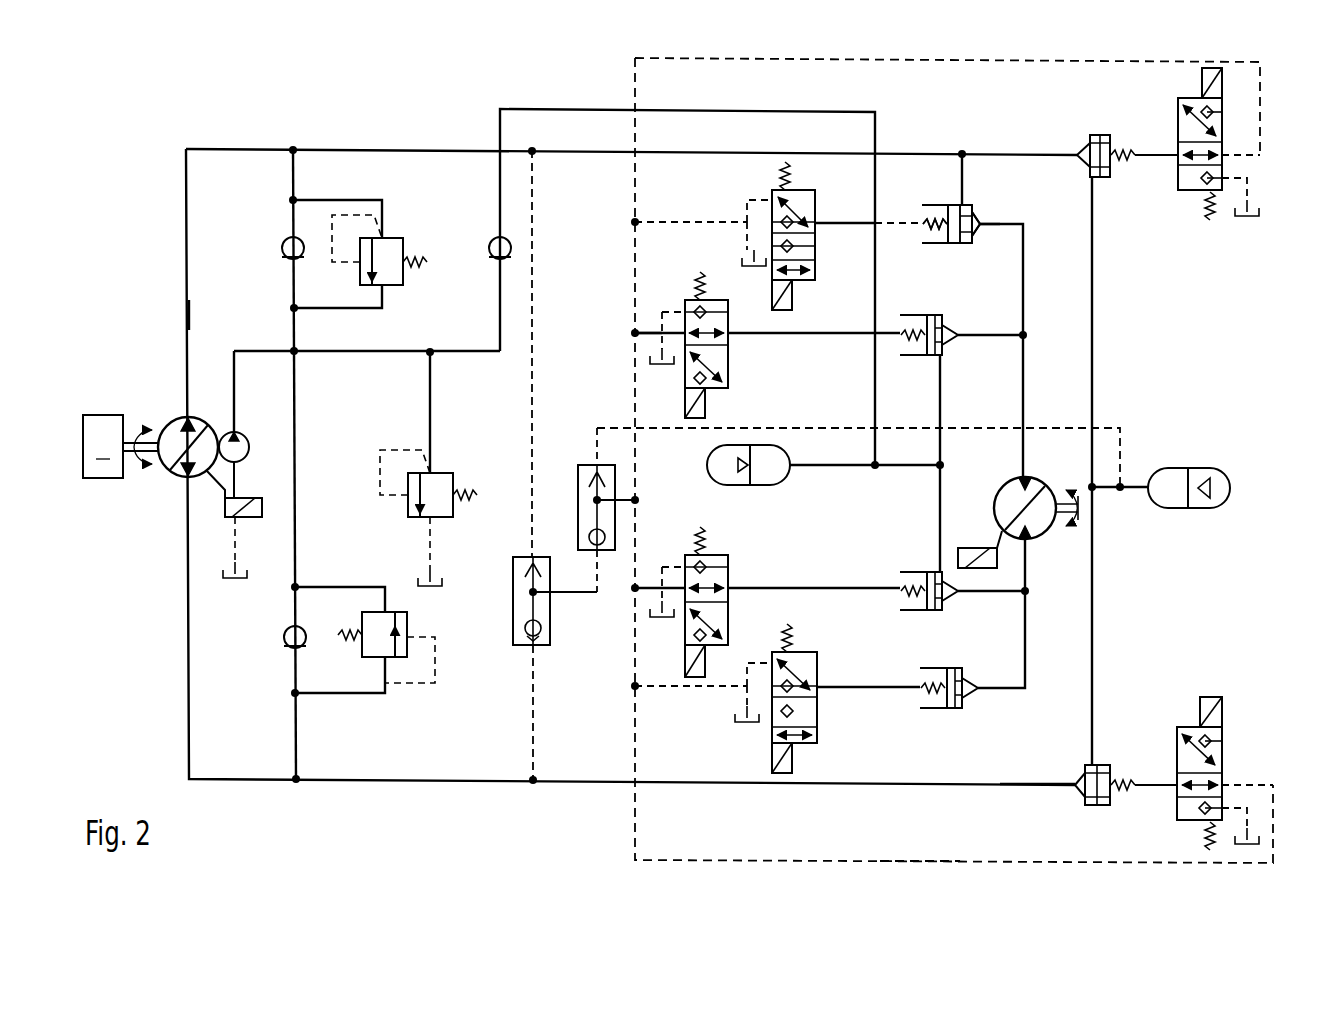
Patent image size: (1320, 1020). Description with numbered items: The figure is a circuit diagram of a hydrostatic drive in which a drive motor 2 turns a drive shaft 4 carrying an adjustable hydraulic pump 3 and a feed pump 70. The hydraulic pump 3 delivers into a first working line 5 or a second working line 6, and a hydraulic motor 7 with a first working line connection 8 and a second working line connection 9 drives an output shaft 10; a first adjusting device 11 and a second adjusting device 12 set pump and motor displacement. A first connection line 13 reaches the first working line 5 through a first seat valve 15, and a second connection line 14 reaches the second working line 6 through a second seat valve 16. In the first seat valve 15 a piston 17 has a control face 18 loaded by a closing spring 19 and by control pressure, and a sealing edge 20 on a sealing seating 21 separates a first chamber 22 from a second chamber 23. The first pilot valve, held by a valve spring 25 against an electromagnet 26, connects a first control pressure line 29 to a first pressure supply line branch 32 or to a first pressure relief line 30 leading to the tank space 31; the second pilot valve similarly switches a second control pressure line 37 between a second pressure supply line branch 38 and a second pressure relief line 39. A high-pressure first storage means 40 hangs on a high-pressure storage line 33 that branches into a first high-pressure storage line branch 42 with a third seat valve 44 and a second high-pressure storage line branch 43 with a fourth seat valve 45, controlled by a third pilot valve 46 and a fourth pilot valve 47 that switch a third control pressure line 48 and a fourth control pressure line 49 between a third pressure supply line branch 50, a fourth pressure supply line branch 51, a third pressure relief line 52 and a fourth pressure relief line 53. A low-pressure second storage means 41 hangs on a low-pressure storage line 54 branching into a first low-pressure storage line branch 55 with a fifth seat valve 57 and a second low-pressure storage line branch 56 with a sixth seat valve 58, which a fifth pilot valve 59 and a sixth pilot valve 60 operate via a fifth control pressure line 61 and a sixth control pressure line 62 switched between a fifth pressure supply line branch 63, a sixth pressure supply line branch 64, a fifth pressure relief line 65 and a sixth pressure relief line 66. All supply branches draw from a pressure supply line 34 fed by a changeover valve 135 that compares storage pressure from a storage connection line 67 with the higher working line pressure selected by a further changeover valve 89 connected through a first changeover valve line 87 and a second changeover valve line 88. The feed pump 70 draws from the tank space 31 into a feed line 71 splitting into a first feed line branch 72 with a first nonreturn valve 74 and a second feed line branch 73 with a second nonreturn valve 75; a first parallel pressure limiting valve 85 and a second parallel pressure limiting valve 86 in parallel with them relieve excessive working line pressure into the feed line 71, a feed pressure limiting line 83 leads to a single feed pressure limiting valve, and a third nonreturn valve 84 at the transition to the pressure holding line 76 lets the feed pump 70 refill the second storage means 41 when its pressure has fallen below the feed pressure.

The drive motor 2 is at (120, 446).
The hydraulic pump 3 is at (203, 425).
The drive shaft 4 is at (147, 428).
The first working line 5 is at (228, 149).
The second working line 6 is at (236, 779).
The hydraulic motor 7 is at (1005, 500).
The first working line connection 8 is at (1020, 482).
The second working line connection 9 is at (1036, 540).
The output shaft 10 is at (1076, 498).
The first adjusting device 11 is at (253, 520).
The second adjusting device 12 is at (966, 546).
The first connection line 13 is at (1025, 278).
The second connection line 14 is at (1027, 645).
The first seat valve 15 is at (918, 186).
The second seat valve 16 is at (920, 720).
The piston 17 is at (965, 216).
The control face 18 is at (940, 206).
The closing spring 19 is at (935, 246).
The sealing edge 20 is at (976, 241).
The sealing seating 21 is at (979, 224).
The first chamber 22 is at (956, 212).
The second chamber 23 is at (987, 227).
The valve spring 25 is at (800, 173).
The electromagnet 26 is at (794, 300).
The first control pressure line 29 is at (861, 232).
The first pressure relief line 30 is at (745, 203).
The tank space 31 is at (232, 580).
The first pressure supply line branch 32 is at (661, 220).
The high-pressure storage line 33 is at (1137, 490).
The pressure supply line 34 is at (637, 455).
The second control pressure line 37 is at (836, 690).
The second pressure supply line branch 38 is at (672, 690).
The second pressure relief line 39 is at (744, 698).
The first storage means 40 is at (1172, 468).
The second storage means 41 is at (763, 487).
The first high-pressure storage line branch 42 is at (1060, 152).
The second high-pressure storage line branch 43 is at (1094, 681).
The third seat valve 44 is at (1122, 125).
The fourth seat valve 45 is at (1068, 805).
The third pilot valve 46 is at (1238, 117).
The fourth pilot valve 47 is at (1160, 809).
The third control pressure line 48 is at (1160, 160).
The fourth control pressure line 49 is at (1160, 782).
The third pressure supply line branch 50 is at (969, 62).
The fourth pressure supply line branch 51 is at (925, 858).
The third pressure relief line 52 is at (1252, 193).
The fourth pressure relief line 53 is at (1262, 806).
The low-pressure storage line 54 is at (831, 468).
The first low-pressure storage line branch 55 is at (982, 340).
The second low-pressure storage line branch 56 is at (936, 498).
The fifth seat valve 57 is at (900, 363).
The sixth seat valve 58 is at (904, 616).
The fifth pilot valve 59 is at (660, 397).
The sixth pilot valve 60 is at (660, 651).
The fifth control pressure line 61 is at (782, 336).
The sixth control pressure line 62 is at (791, 586).
The fifth pressure supply line branch 63 is at (638, 330).
The sixth pressure supply line branch 64 is at (639, 585).
The fifth pressure relief line 65 is at (663, 305).
The sixth pressure relief line 66 is at (663, 560).
The storage connection line 67 is at (597, 432).
The feed pump 70 is at (250, 441).
The feed line 71 is at (260, 351).
The first feed line branch 72 is at (293, 184).
The second feed line branch 73 is at (296, 728).
The first nonreturn valve 74 is at (282, 248).
The second nonreturn valve 75 is at (284, 640).
The pressure holding line 76 is at (500, 117).
The feed pressure limiting line 83 is at (430, 397).
The third nonreturn valve 84 is at (489, 248).
The first parallel pressure limiting valve 85 is at (390, 278).
The second parallel pressure limiting valve 86 is at (362, 652).
The first changeover valve line 87 is at (534, 301).
The second changeover valve line 88 is at (533, 705).
The further changeover valve 89 is at (513, 613).
The shuttle valve 135 is at (578, 497).